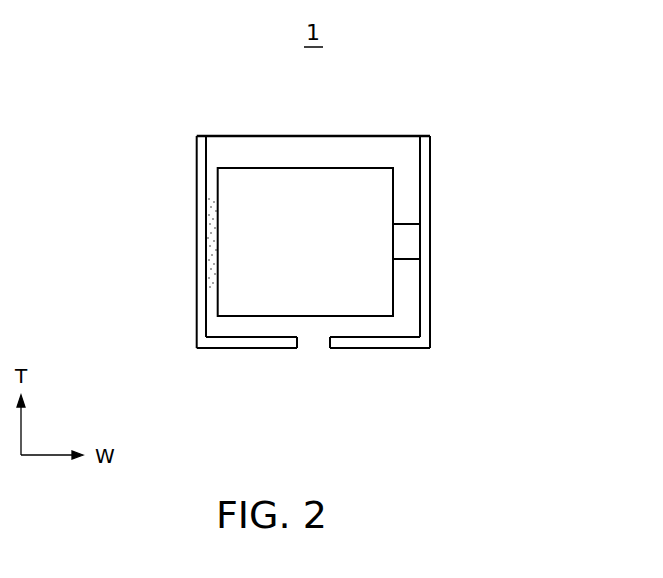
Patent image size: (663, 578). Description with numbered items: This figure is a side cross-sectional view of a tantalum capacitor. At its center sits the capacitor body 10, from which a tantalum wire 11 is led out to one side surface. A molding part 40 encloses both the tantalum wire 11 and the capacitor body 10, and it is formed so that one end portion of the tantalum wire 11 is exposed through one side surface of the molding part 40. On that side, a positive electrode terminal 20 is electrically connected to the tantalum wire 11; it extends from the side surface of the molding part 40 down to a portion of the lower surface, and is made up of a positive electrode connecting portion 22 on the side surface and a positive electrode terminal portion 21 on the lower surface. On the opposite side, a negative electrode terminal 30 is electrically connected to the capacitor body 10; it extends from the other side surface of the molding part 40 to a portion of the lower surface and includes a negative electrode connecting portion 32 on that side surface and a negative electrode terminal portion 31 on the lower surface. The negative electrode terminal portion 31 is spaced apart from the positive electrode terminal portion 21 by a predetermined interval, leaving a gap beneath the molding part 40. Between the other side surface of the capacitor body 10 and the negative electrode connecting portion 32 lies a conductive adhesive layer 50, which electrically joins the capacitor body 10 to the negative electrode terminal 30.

The capacitor body 10 is at (372, 203).
The tantalum wire 11 is at (405, 241).
The positive electrode terminal 20 is at (445, 264).
The positive electrode terminal portion 21 is at (379, 343).
The positive electrode connecting portion 22 is at (425, 310).
The negative electrode terminal 30 is at (182, 265).
The negative electrode terminal portion 31 is at (248, 343).
The negative electrode connecting portion 32 is at (200, 310).
The molding part 40 is at (310, 153).
The conductive adhesive layer 50 is at (215, 236).